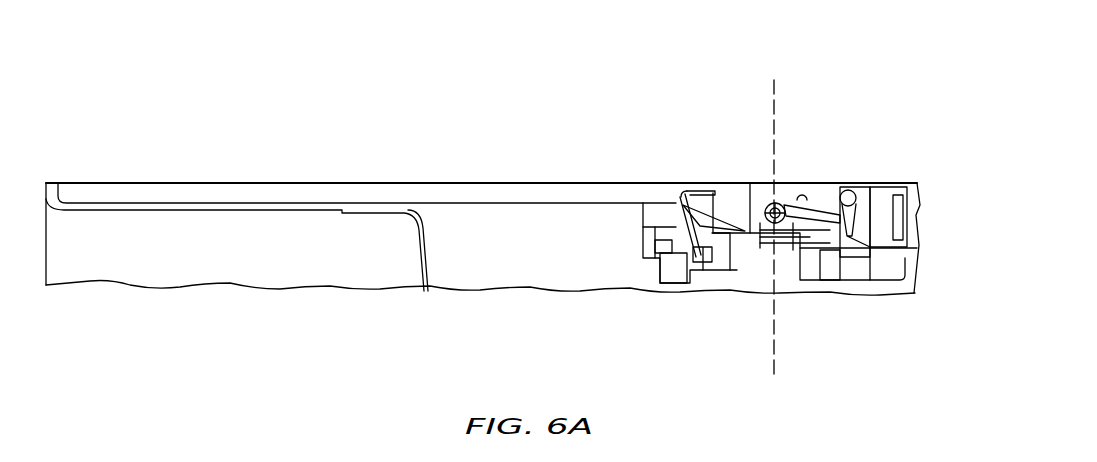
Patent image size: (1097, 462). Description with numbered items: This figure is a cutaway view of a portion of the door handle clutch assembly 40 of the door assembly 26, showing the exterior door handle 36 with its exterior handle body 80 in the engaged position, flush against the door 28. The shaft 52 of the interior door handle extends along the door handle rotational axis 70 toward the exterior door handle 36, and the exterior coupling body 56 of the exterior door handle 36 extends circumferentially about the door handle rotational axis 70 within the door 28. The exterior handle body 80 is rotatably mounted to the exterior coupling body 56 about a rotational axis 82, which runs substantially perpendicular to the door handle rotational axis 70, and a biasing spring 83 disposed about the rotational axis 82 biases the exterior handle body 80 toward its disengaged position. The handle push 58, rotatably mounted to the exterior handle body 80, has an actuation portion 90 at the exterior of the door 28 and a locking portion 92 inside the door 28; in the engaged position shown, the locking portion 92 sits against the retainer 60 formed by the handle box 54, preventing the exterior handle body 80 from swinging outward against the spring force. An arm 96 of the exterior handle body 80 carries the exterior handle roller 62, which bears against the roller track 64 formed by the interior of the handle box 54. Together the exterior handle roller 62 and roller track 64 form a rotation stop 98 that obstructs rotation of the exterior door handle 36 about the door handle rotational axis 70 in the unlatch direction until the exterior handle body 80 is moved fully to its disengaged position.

The door assembly 26 is at (866, 69).
The door 28 is at (108, 275).
The exterior door handle 36 is at (438, 152).
The door handle clutch assembly 40 is at (754, 92).
The shaft 52 is at (782, 283).
The handle box 54 is at (658, 268).
The exterior coupling body 56 is at (830, 285).
The handle push 58 is at (880, 186).
The retainer 60 is at (868, 282).
The exterior handle roller 62 is at (680, 247).
The roller track 64 is at (665, 210).
The door handle rotational axis 70 is at (776, 113).
The exterior handle body 80 is at (517, 193).
The rotational axis 82 is at (768, 197).
The biasing spring 83 is at (795, 200).
The actuation portion 90 is at (858, 190).
The locking portion 92 is at (850, 213).
The arm 96 is at (687, 207).
The rotation stop 98 is at (640, 261).